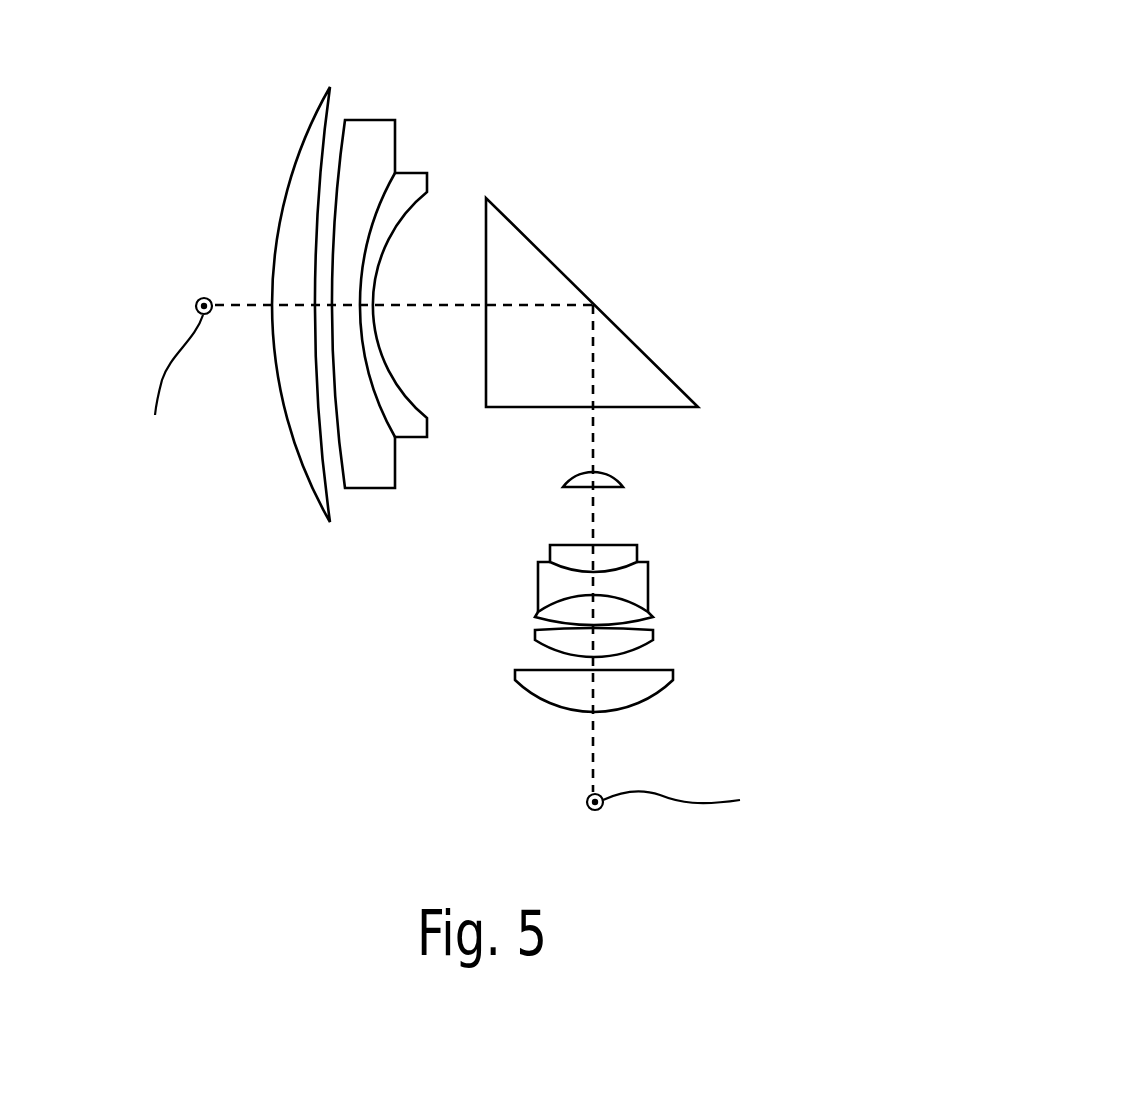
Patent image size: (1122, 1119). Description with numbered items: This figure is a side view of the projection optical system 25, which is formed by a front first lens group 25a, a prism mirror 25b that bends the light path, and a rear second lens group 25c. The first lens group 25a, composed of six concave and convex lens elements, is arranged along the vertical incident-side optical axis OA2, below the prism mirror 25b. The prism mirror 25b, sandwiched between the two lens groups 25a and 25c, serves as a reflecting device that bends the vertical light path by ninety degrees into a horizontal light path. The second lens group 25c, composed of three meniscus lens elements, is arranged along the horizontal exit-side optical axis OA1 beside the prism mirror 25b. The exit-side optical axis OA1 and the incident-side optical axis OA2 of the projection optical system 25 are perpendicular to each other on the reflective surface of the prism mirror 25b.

The projection optical system 25 is at (496, 411).
The first lens group 25a is at (688, 478).
The prism mirror 25b is at (630, 345).
The second lens group 25c is at (432, 527).
The exit-side optical axis OA1 is at (424, 298).
The incident-side optical axis OA2 is at (596, 440).